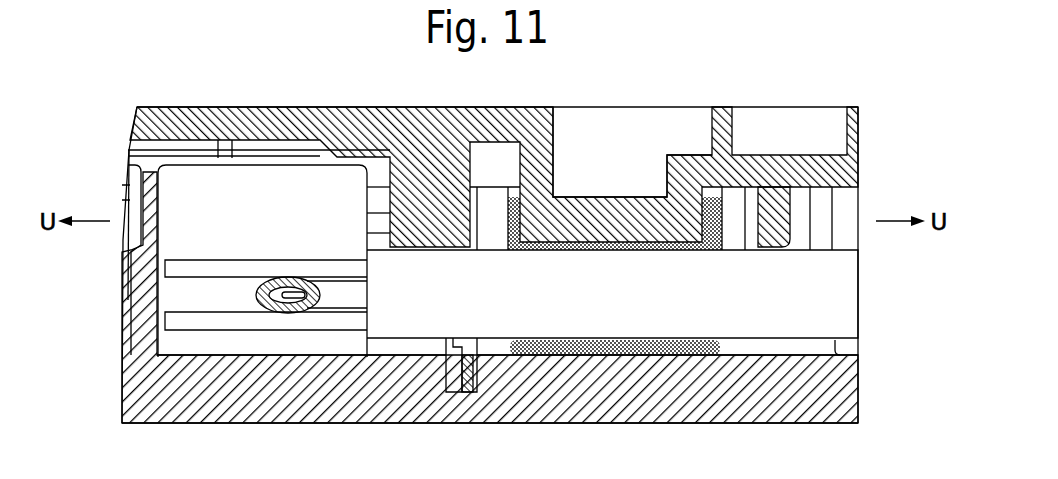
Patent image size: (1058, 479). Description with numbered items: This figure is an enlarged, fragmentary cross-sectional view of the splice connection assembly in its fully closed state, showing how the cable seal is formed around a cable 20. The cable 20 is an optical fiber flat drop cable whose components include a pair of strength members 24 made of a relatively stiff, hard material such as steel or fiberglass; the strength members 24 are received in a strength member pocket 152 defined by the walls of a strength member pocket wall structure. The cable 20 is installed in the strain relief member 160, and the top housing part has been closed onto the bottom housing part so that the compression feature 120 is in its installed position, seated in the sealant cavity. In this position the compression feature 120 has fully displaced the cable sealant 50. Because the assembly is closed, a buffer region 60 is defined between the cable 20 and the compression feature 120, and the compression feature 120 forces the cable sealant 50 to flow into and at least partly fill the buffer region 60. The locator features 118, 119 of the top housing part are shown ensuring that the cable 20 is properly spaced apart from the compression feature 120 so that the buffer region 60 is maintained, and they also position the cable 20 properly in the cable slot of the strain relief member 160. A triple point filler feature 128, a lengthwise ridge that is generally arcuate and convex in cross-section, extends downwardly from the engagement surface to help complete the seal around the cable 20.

The cable 20 is at (822, 316).
The strength members 24 is at (235, 265).
The cable sealant 50 is at (662, 346).
The buffer region 60 is at (678, 242).
The locator structure 118 is at (386, 210).
The locator structure 119 is at (787, 218).
The compression feature 120 is at (616, 215).
The triple point filler feature 128 is at (628, 242).
The strength member pocket 152 is at (195, 226).
The strain relief member 160 is at (452, 392).